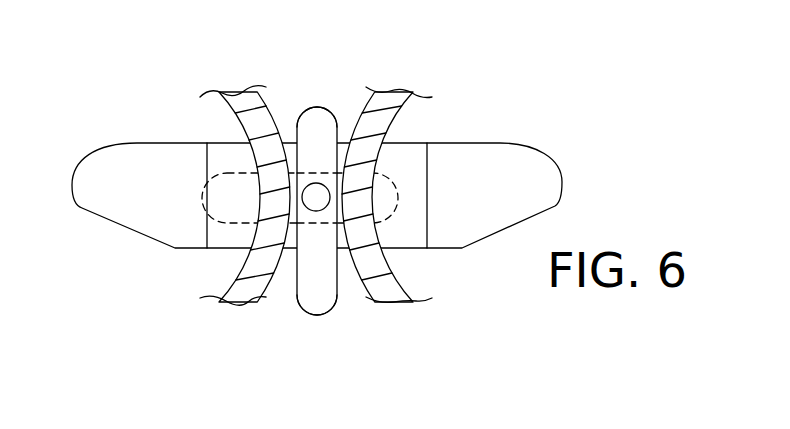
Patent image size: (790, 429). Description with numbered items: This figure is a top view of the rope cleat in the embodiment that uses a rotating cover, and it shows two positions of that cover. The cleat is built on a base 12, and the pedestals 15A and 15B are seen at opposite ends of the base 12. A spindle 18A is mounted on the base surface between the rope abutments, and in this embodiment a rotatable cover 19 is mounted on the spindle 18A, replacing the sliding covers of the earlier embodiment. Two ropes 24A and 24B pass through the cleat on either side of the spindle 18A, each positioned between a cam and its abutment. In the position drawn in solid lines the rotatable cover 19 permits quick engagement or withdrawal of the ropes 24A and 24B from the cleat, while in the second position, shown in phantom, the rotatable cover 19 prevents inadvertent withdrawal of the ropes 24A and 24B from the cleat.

The base 12 is at (489, 196).
The pedestal 15A is at (413, 238).
The pedestal 15B is at (225, 238).
The spindle 18A is at (313, 170).
The rotatable cover 19 is at (328, 118).
The rope 24A is at (400, 302).
The rope 24B is at (228, 302).